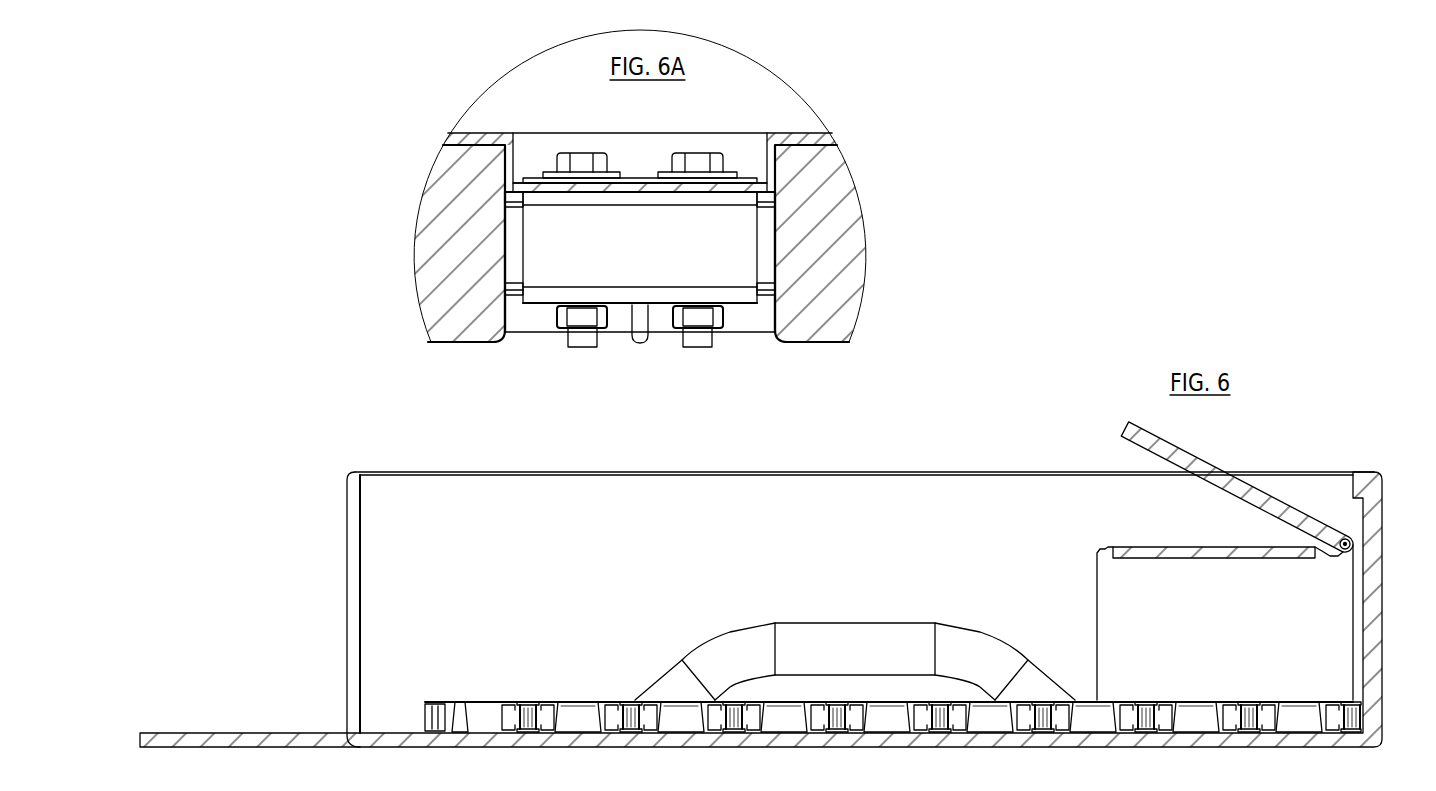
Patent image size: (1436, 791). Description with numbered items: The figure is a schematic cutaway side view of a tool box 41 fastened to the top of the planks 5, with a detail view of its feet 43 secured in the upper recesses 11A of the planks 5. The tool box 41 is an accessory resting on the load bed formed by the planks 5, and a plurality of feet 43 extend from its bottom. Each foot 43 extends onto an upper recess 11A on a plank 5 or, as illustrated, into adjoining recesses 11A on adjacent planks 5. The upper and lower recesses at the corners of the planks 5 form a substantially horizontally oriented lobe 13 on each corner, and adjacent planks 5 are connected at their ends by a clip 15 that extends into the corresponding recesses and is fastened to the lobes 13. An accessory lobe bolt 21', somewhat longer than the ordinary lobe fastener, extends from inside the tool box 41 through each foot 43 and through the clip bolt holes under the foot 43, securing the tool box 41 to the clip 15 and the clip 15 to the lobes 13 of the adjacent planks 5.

In FIG. 6A, the plank 5 is at (822, 345).
In FIG. 6A, the foot 43 is at (515, 157).
In FIG. 6, the foot 43 is at (1146, 700).
In FIG. 6A, the accessory lobe bolt 21' is at (705, 137).
In FIG. 6A, the upper recess 11A is at (513, 190).
In FIG. 6, the upper recess 11A is at (543, 702).
In FIG. 6A, the lobe 13 is at (513, 257).
In FIG. 6A, the clip 15 is at (663, 298).
In FIG. 6, the tool box 41 is at (1327, 582).